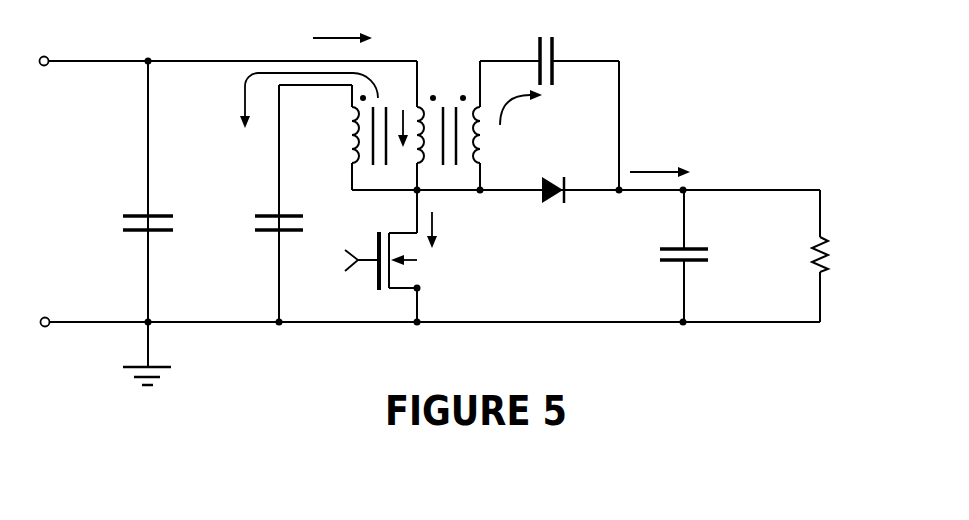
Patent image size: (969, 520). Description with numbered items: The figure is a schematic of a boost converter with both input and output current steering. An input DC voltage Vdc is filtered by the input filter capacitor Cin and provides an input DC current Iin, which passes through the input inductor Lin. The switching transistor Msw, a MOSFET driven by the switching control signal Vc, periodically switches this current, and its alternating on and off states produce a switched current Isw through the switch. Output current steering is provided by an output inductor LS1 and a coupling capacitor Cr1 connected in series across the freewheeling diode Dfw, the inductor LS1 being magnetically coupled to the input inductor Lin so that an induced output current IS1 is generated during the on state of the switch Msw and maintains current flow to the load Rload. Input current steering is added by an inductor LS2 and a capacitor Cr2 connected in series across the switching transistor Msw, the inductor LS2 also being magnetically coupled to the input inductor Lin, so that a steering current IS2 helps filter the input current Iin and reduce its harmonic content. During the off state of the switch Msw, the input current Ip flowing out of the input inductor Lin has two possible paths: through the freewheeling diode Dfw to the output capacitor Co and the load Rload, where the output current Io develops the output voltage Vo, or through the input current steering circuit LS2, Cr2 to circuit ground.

The input DC voltage Vdc is at (73, 253).
The input filter capacitor Cin is at (156, 208).
The capacitor Cr2 is at (289, 208).
The input DC current Iin is at (327, 38).
The input current steering circuit current IS2 is at (300, 118).
The inductor LS2 is at (341, 130).
The input current Ip is at (400, 144).
The input inductor Lin is at (441, 115).
The output inductor LS1 is at (499, 140).
The induced output current IS1 is at (537, 116).
The coupling capacitor Cr1 is at (567, 57).
The freewheeling diode Dfw is at (560, 208).
The output current Io is at (660, 156).
The switching transistor Msw is at (427, 256).
The switching control signal Vc is at (345, 259).
The switched current Isw is at (448, 225).
The output capacitor Co is at (691, 256).
The output voltage Vo is at (790, 297).
The load Rload is at (858, 254).